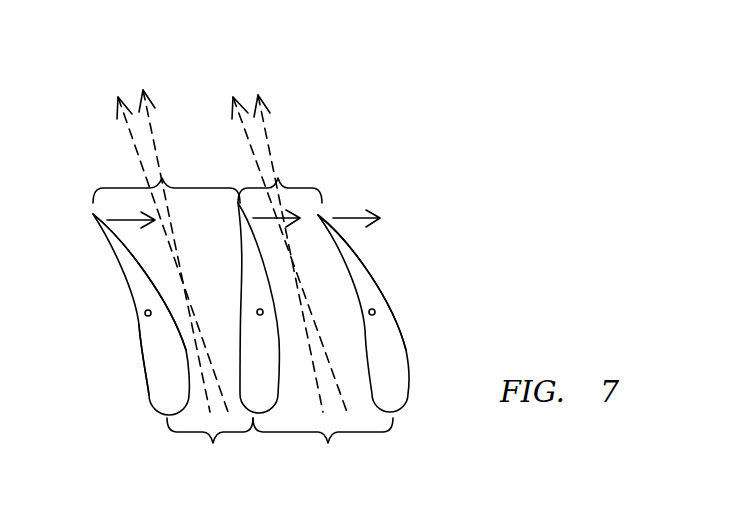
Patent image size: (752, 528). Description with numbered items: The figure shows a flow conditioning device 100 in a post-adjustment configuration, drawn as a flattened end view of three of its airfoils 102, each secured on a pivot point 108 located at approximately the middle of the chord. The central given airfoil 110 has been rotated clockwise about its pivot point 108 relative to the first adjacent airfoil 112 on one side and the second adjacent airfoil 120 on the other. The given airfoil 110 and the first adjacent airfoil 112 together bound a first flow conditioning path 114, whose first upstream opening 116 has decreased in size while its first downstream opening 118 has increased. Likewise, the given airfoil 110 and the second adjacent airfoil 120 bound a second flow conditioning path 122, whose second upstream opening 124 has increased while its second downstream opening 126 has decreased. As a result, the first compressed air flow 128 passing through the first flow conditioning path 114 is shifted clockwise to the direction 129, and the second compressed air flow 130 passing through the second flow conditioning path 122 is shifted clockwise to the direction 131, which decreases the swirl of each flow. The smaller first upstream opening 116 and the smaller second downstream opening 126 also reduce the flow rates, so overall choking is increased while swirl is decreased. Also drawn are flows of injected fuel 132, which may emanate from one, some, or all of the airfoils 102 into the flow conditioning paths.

The flow conditioning device 100 is at (374, 156).
The airfoils 102 is at (128, 303).
The pivot point 108 is at (376, 311).
The given airfoil 110 is at (242, 274).
The first adjacent airfoil 112 is at (139, 348).
The first flow conditioning path 114 is at (155, 250).
The first upstream opening 116 is at (213, 443).
The first downstream opening 118 is at (162, 180).
The second adjacent airfoil 120 is at (365, 268).
The second flow conditioning path 122 is at (352, 362).
The second upstream opening 124 is at (328, 443).
The second downstream opening 126 is at (278, 180).
The first compressed air flow 128 is at (134, 145).
The shifted direction of first compressed air flow 129 is at (153, 127).
The second compressed air flow 130 is at (243, 127).
The shifted direction of second compressed air flow 131 is at (265, 131).
The injected fuel flow 132 is at (343, 215).